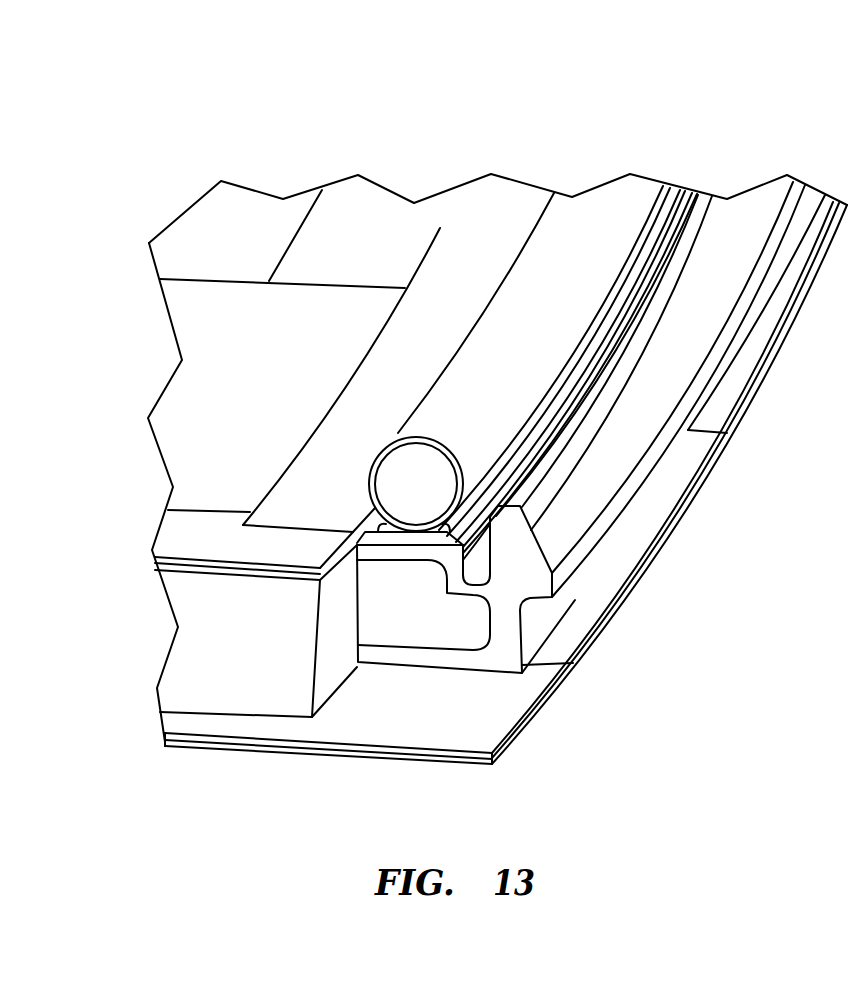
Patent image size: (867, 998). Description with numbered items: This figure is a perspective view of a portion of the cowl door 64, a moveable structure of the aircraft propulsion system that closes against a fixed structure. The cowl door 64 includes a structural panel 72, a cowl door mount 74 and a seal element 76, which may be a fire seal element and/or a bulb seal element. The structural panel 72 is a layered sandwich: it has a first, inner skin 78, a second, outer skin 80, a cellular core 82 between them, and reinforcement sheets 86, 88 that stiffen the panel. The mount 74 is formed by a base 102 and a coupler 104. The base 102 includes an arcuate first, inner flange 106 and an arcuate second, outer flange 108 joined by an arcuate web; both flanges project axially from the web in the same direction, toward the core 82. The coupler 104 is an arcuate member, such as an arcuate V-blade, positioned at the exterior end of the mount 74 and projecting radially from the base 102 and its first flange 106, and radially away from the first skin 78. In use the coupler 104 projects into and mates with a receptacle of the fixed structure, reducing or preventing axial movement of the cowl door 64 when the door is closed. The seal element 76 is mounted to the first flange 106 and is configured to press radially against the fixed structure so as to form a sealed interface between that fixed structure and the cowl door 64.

The cowl door 64 is at (498, 133).
The structural panel 72 is at (150, 675).
The cowl door mount 74 is at (483, 678).
The seal element 76 is at (612, 165).
The first skin 78 is at (287, 505).
The second skin 80 is at (253, 753).
The cellular core 82 is at (188, 615).
The reinforcement sheet 86 is at (160, 567).
The reinforcement sheet 88 is at (173, 738).
The base 102 is at (530, 643).
The coupler 104 is at (560, 515).
The first flange 106 is at (392, 555).
The second flange 108 is at (422, 660).